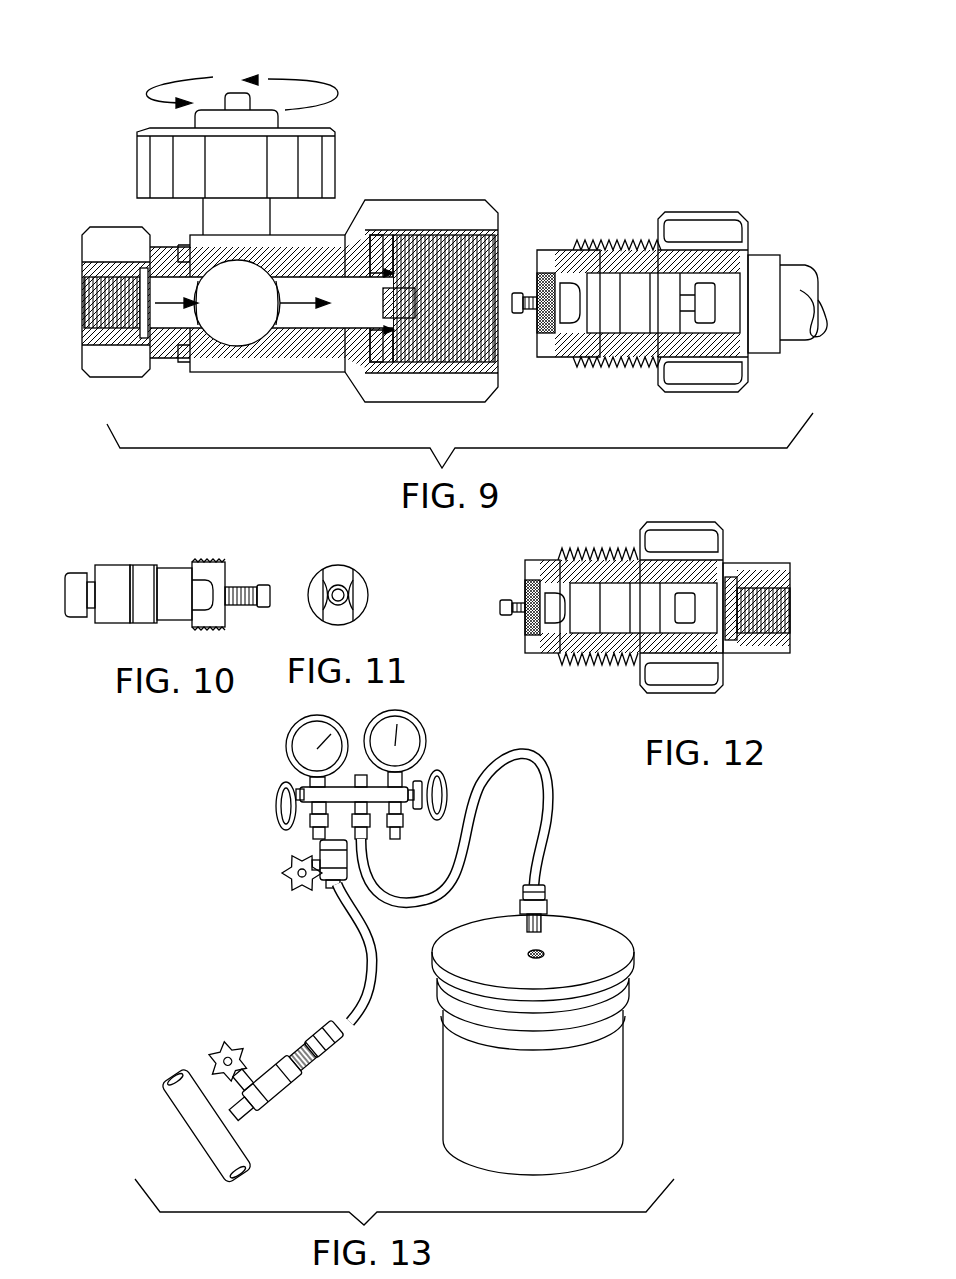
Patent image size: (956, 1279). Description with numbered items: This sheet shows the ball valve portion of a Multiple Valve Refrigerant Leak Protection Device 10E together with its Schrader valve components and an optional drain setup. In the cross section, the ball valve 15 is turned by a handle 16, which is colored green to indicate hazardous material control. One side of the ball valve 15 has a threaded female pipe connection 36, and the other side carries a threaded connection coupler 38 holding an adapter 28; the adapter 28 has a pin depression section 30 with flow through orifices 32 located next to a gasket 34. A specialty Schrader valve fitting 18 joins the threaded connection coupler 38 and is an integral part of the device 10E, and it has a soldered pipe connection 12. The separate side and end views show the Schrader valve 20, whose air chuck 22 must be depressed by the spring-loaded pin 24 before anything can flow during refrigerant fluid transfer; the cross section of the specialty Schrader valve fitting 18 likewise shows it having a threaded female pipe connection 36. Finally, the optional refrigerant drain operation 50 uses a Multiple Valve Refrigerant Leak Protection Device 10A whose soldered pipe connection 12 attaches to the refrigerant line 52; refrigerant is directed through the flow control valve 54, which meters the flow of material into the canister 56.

In FIG. 9, the Multiple Valve Refrigerant Leak Protection Device 10E is at (458, 150).
In FIG. 13, the Multiple Valve Refrigerant Leak Protection Device 10A is at (262, 1092).
In FIG. 9, the soldered pipe connection 12 is at (806, 275).
In FIG. 9, the ball valve 15 is at (245, 340).
In FIG. 13, the ball valve 15 is at (338, 884).
In FIG. 9, the handle 16 is at (148, 152).
In FIG. 9, the specialty Schrader valve fitting 18 is at (706, 232).
In FIG. 12, the specialty Schrader valve fitting 18 is at (674, 538).
In FIG. 9, the Schrader valve 20 is at (666, 285).
In FIG. 10, the Schrader valve 20 is at (203, 562).
In FIG. 11, the Schrader valve 20 is at (360, 582).
In FIG. 12, the Schrader valve 20 is at (650, 603).
In FIG. 9, the air chuck 22 is at (612, 285).
In FIG. 10, the air chuck 22 is at (180, 577).
In FIG. 12, the air chuck 22 is at (619, 666).
In FIG. 9, the spring-loaded pin 24 is at (513, 294).
In FIG. 10, the spring-loaded pin 24 is at (261, 587).
In FIG. 12, the spring-loaded pin 24 is at (497, 608).
In FIG. 9, the adapter 28 is at (388, 238).
In FIG. 9, the pin depression section 30 is at (415, 305).
In FIG. 9, the flow through orifices 32 is at (463, 233).
In FIG. 9, the gasket 34 is at (373, 233).
In FIG. 12, the gasket 34 is at (731, 580).
In FIG. 9, the threaded female pipe connection 36 is at (86, 276).
In FIG. 12, the threaded female pipe connection 36 is at (790, 610).
In FIG. 9, the threaded connection coupler 38 is at (399, 279).
In FIG. 13, the refrigerant drain operation 50 is at (252, 980).
In FIG. 13, the refrigerant line 52 is at (187, 1110).
In FIG. 13, the flow control valve 54 is at (277, 805).
In FIG. 13, the canister 56 is at (602, 1091).